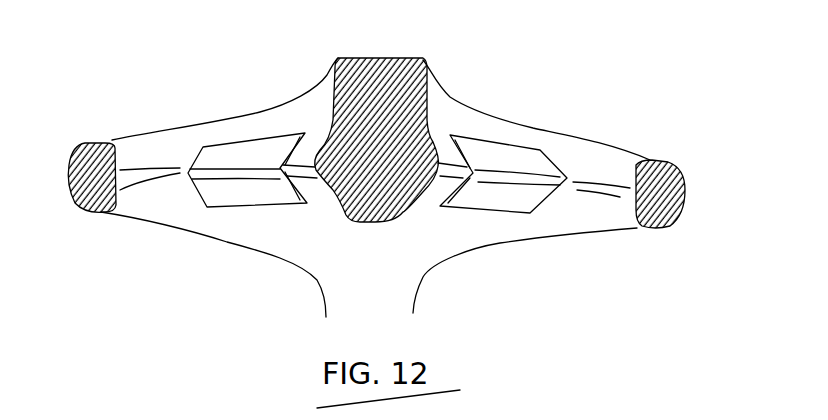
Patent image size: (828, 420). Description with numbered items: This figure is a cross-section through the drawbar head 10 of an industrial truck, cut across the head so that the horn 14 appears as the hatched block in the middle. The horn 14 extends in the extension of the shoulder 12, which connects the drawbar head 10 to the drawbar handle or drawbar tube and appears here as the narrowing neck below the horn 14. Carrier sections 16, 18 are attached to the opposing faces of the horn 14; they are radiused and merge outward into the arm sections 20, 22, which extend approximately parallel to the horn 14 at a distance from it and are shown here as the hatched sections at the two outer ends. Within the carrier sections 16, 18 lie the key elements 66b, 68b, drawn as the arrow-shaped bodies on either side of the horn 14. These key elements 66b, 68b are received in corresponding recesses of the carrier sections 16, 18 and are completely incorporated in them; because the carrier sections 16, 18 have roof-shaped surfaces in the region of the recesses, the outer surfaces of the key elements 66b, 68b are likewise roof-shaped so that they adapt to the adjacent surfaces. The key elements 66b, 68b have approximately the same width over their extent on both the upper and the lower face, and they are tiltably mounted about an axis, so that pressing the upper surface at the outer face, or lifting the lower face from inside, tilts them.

The drawbar head 10 is at (533, 113).
The shoulder 12 is at (410, 292).
The horn 14 is at (363, 55).
The carrier section 16 is at (185, 133).
The carrier section 18 is at (490, 125).
The arm section 20 is at (75, 143).
The arm section 22 is at (678, 177).
The key element 66b is at (205, 195).
The key element 68b is at (512, 215).